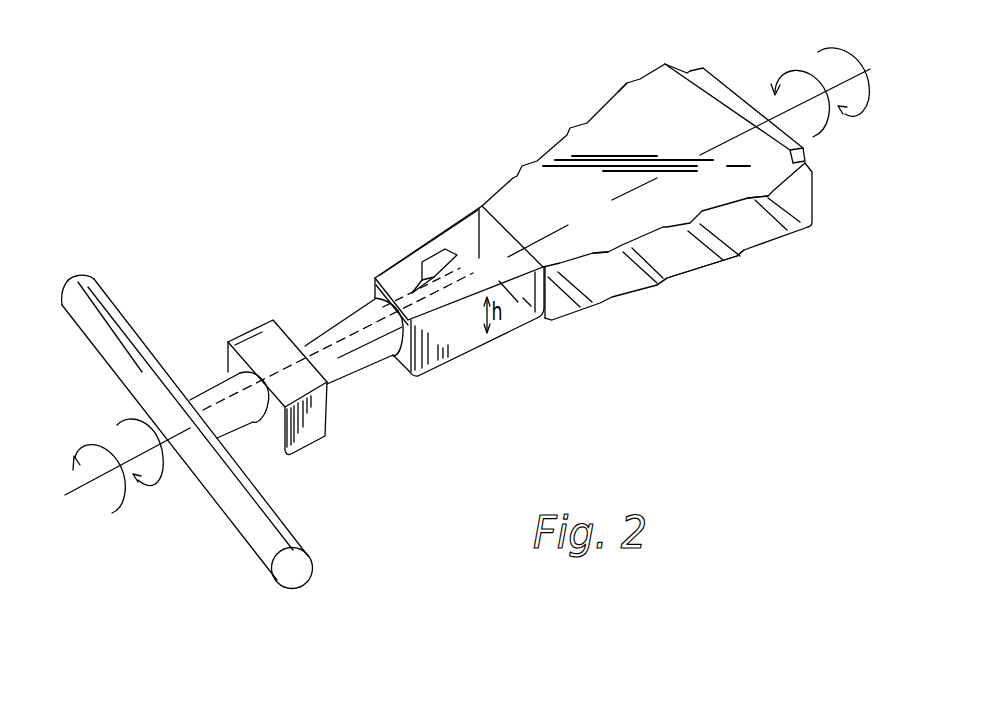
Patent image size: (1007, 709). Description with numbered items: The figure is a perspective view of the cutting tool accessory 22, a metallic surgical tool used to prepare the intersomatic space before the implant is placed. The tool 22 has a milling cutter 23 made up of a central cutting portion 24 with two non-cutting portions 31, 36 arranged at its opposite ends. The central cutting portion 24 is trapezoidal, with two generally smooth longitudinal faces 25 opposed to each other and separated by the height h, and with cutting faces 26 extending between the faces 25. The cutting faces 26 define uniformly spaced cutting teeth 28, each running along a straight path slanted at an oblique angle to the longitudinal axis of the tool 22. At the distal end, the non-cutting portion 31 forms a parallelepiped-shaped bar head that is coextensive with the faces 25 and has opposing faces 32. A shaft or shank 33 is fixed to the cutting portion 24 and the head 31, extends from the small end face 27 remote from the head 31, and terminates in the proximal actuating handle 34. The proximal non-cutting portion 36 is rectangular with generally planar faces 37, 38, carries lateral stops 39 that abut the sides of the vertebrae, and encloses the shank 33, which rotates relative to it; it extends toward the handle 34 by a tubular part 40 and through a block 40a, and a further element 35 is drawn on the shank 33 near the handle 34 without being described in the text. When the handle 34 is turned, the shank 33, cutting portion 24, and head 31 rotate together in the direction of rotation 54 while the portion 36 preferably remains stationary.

The cutting tool accessory 22 is at (600, 223).
The milling cutter 23 is at (627, 338).
The central cutting portion 24 is at (667, 289).
The longitudinal faces 25 is at (659, 120).
The cutting faces 26 is at (502, 190).
The small end face 27 is at (539, 318).
The cutting teeth 28 is at (520, 167).
The non-cutting portion 31 is at (747, 104).
The opposing faces 32 is at (690, 72).
The shaft or shank 33 is at (473, 247).
The actuating handle 34 is at (246, 527).
The stop block 35 is at (312, 330).
The non-cutting portion 36 is at (469, 339).
The planar face 37 is at (438, 240).
The planar face 38 is at (407, 357).
The lateral stops 39 is at (412, 282).
The tubular part 40 is at (358, 367).
The block 40a is at (239, 332).
The direction of rotation 54 is at (75, 492).